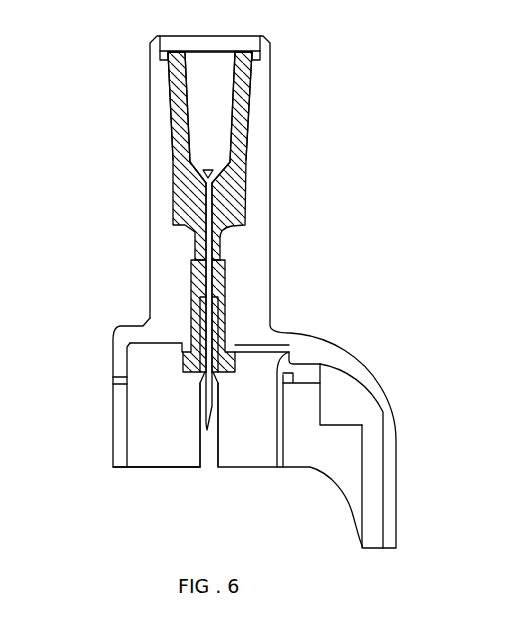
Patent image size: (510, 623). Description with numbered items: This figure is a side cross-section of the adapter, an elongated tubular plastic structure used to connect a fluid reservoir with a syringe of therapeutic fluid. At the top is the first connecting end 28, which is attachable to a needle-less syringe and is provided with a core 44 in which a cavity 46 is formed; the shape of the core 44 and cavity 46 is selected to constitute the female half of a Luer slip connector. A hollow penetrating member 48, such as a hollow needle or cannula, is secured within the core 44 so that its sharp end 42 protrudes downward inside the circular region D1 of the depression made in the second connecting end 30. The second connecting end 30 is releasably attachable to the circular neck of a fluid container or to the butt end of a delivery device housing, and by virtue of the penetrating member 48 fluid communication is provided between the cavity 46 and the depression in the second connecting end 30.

The first connecting end 28 is at (157, 100).
The second connecting end 30 is at (112, 467).
The sharp end 42 is at (212, 407).
The core 44 is at (190, 188).
The cavity 46 is at (222, 88).
The hollow penetrating member 48 is at (215, 247).
The circular region D1 is at (178, 450).